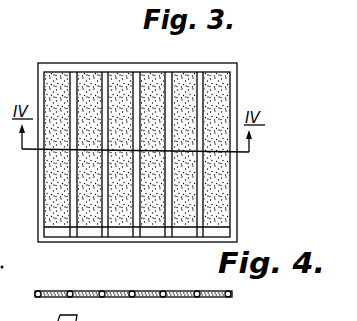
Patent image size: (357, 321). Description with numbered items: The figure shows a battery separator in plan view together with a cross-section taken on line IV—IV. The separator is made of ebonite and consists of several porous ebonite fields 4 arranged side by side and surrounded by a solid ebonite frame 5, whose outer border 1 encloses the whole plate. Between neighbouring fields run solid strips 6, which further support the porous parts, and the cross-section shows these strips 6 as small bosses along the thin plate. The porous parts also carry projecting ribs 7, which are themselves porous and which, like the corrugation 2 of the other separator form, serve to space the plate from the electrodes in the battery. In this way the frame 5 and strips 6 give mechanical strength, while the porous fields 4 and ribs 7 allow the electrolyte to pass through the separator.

In FIG. 3, the frame 1 is at (58, 63).
In FIG. 3, the corrugation 2 is at (105, 83).
In FIG. 3, the porous ebonite fields 4 is at (62, 182).
In FIG. 4, the porous ebonite fields 4 is at (218, 302).
In FIG. 3, the solid ebonite frame 5 is at (230, 74).
In FIG. 3, the solid strips 6 is at (100, 198).
In FIG. 4, the solid strips 6 is at (163, 298).
In FIG. 3, the projecting ribs 7 is at (195, 213).
In FIG. 4, the projecting ribs 7 is at (198, 298).